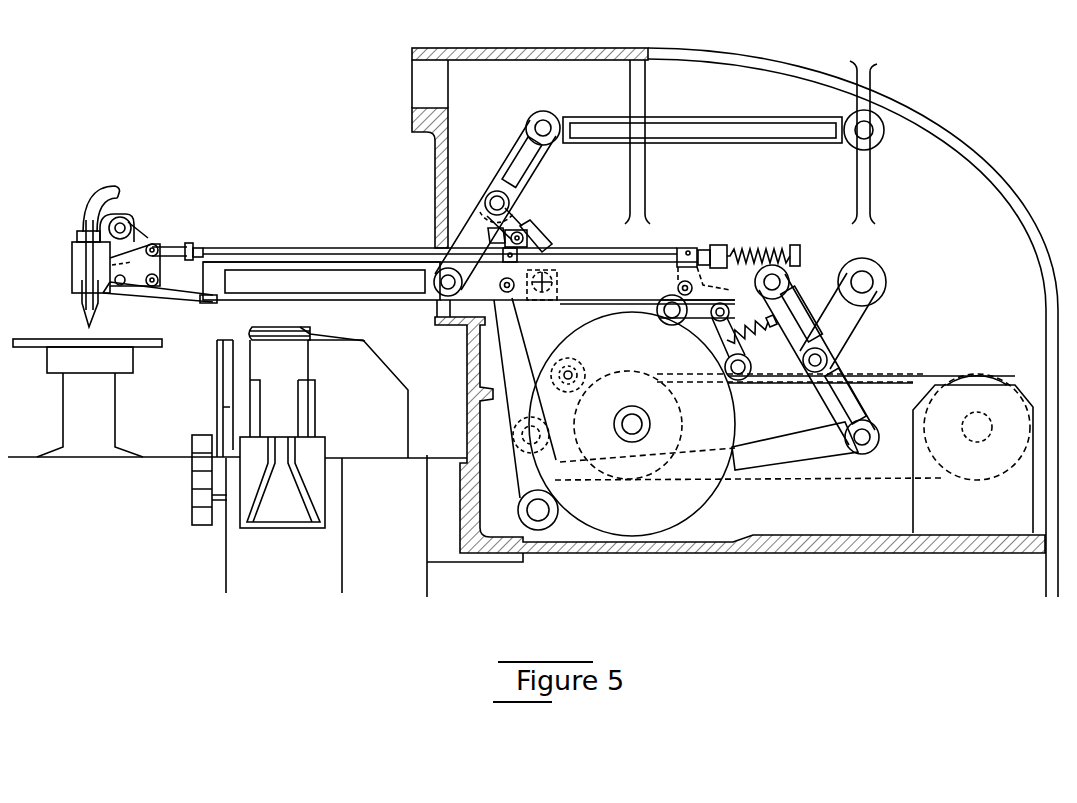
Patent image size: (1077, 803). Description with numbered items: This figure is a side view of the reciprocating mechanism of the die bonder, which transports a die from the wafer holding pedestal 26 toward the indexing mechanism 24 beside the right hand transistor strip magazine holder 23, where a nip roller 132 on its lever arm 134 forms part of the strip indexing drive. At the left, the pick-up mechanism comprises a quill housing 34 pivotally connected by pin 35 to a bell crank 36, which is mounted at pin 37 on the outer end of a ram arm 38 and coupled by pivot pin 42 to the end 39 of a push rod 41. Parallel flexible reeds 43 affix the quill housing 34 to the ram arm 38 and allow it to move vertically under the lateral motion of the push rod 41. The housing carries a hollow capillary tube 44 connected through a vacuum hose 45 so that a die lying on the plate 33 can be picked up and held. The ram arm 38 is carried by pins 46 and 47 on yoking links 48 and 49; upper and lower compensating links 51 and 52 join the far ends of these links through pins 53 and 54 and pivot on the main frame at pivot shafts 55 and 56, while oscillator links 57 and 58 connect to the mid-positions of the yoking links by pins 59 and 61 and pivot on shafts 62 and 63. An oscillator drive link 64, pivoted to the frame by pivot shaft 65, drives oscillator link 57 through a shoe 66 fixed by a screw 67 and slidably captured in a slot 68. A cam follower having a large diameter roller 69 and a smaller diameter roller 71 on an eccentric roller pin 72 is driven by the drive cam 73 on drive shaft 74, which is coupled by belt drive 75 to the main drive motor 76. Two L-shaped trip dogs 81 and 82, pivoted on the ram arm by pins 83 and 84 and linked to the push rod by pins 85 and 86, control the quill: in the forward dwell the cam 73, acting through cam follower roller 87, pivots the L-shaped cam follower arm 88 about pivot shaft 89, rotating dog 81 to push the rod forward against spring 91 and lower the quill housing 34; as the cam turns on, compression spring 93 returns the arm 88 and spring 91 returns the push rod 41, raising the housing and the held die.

The right hand transistor strip magazine holder 23 is at (328, 494).
The transistor strip indexing mechanism 24 is at (394, 380).
The wafer holding pedestal 26 is at (114, 440).
The plate 33 is at (128, 339).
The quill housing 34 is at (72, 274).
The pin 35 is at (120, 290).
The bell crank 36 is at (132, 232).
The pin 37 is at (150, 288).
The ram arm 38 is at (225, 300).
The end of push rod 39 is at (189, 243).
The push rod 41 is at (397, 247).
The pivot pin 42 is at (158, 240).
The leaf springs or reeds 43 is at (200, 250).
The hollow capillary tube 44 is at (87, 322).
The vacuum hose 45 is at (103, 190).
The pin 46 is at (434, 283).
The pin 47 is at (786, 284).
The yoking link 48 is at (510, 152).
The yoking link 49 is at (826, 402).
The upper compensating link 51 is at (754, 118).
The lower compensating link 52 is at (790, 476).
The pin 53 is at (545, 111).
The pin 54 is at (870, 432).
The pivot shaft 55 is at (852, 122).
The pivot shaft 56 is at (522, 450).
The oscillator link 57 is at (522, 212).
The oscillator link 58 is at (858, 314).
The pin 59 is at (486, 200).
The pin 61 is at (829, 360).
The pivot shaft 62 is at (553, 283).
The pivot shaft 63 is at (880, 280).
The oscillator drive link 64 is at (514, 410).
The pivot shaft 65 is at (520, 498).
The shoe 66 is at (538, 238).
The screw 67 is at (528, 236).
The slot 68 is at (523, 232).
The large diameter roller 69 is at (560, 350).
The smaller diameter roller 71 is at (548, 372).
The eccentric roller pin 72 is at (580, 368).
The drive cam 73 is at (604, 320).
The drive shaft 74 is at (640, 410).
The belt drive 75 is at (900, 374).
The main drive motor 76 is at (990, 385).
The L-shaped trip dog 81 is at (678, 254).
The L-shaped trip dog 82 is at (499, 287).
The pin 83 is at (678, 288).
The pin 84 is at (505, 300).
The pin 85 is at (700, 248).
The pin 86 is at (548, 256).
The cam follower roller 87 is at (740, 380).
The L-shaped cam follower arm 88 is at (708, 345).
The pivot shaft 89 is at (662, 320).
The spring 91 is at (762, 248).
The compression spring 93 is at (748, 340).
The nip roller 132 is at (292, 327).
The lever arm 134 is at (350, 336).